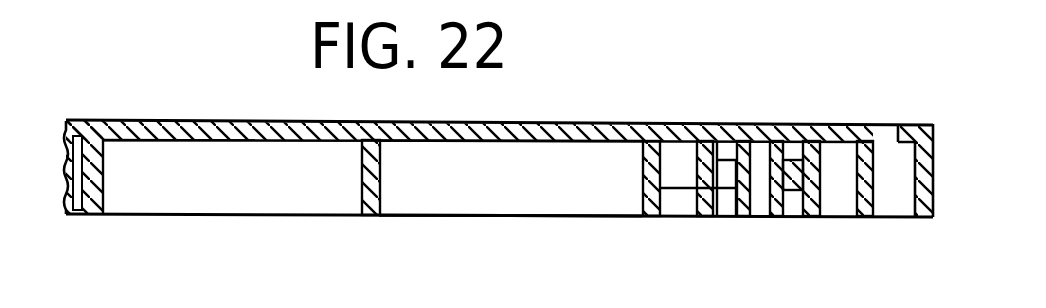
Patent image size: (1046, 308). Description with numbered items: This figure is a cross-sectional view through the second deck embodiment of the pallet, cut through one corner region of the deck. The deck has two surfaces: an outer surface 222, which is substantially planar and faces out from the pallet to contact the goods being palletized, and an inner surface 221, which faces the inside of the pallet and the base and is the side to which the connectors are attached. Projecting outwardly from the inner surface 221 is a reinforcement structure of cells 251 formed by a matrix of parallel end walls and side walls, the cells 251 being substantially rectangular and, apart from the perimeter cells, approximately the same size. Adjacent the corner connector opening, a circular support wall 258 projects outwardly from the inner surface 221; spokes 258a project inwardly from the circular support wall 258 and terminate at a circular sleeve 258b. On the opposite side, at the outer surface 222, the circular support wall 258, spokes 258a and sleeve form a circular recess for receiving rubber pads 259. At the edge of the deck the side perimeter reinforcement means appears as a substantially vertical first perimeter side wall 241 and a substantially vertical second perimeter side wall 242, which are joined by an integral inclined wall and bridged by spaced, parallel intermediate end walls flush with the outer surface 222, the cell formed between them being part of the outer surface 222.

The outer surface 222 is at (512, 175).
The inner surface 221 is at (637, 243).
The cells 251 is at (486, 214).
The circular support wall 258 is at (760, 179).
The spokes 258a is at (721, 172).
The circular sleeve 258b is at (762, 122).
The rubber pads 259 is at (784, 121).
The second perimeter side wall 242 is at (874, 198).
The first perimeter side wall 241 is at (924, 200).